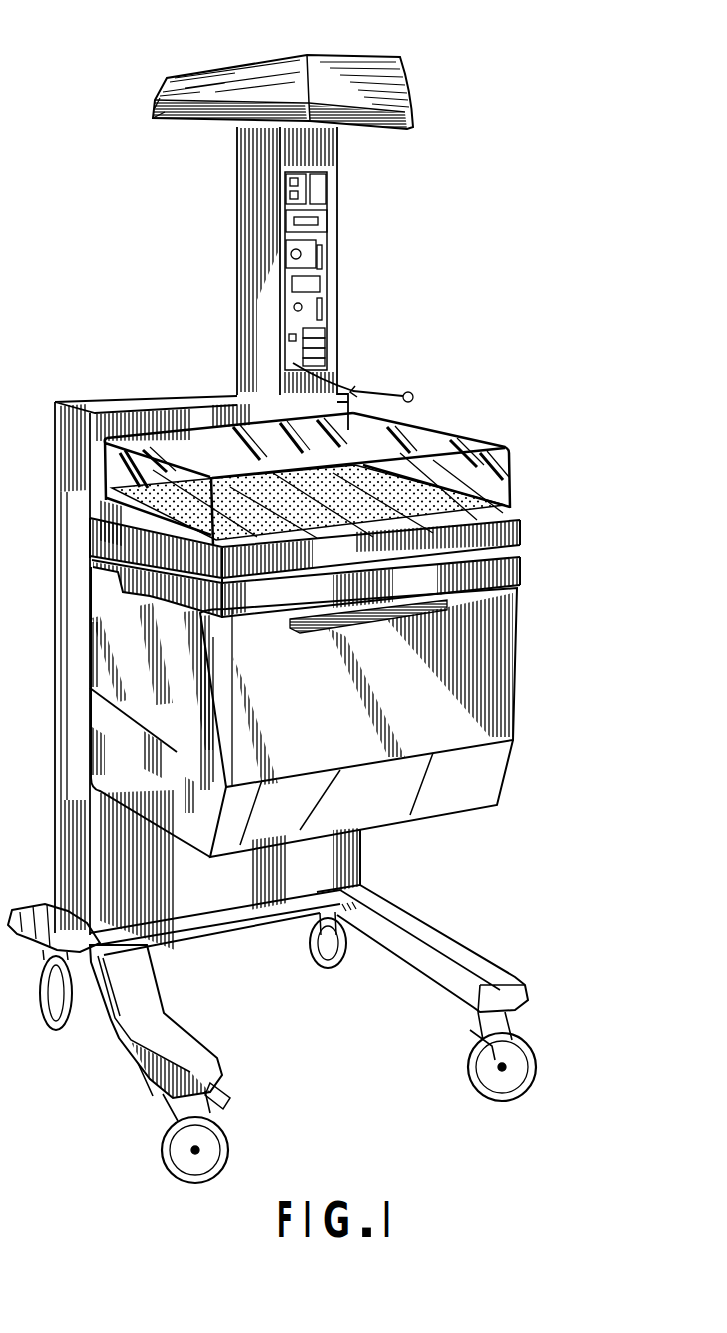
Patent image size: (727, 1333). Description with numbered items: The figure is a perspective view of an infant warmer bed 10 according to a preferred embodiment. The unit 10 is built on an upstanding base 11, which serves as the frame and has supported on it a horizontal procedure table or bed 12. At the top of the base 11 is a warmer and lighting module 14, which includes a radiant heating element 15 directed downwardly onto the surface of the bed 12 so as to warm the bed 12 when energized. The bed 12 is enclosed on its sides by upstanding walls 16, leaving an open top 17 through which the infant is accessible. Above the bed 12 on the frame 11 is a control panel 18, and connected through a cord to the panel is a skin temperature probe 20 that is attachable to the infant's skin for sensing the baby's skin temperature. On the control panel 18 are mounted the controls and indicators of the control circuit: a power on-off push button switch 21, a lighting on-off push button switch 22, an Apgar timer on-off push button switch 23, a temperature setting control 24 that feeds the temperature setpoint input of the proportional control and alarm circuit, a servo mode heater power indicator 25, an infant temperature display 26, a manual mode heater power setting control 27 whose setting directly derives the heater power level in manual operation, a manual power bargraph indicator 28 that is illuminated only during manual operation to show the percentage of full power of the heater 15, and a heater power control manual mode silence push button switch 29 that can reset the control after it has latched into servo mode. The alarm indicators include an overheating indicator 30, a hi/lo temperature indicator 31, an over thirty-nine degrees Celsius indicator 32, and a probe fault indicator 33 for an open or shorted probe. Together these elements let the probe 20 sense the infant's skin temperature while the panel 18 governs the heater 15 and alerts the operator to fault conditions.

The infant warmer bed 10 is at (544, 66).
The base 11 is at (467, 940).
The procedure table or bed 12 is at (430, 499).
The warmer and lighting module 14 is at (419, 97).
The radiant heating element 15 is at (272, 130).
The upstanding walls 16 is at (103, 486).
The open top 17 is at (250, 458).
The control panel 18 is at (345, 164).
The skin temperature probe 20 is at (413, 396).
The power on-off push button switch 21 is at (289, 183).
The lighting on-off push button switch 22 is at (287, 221).
The Apgar timer on-off push button switch 23 is at (294, 223).
The temperature setting control 24 is at (291, 256).
The servo mode heater power indicator 25 is at (321, 252).
The infant temperature display 26 is at (292, 284).
The manual mode heater power setting control 27 is at (293, 308).
The manual power bargraph indicator 28 is at (321, 300).
The heater power control manual mode silence push button switch 29 is at (289, 339).
The overheating indicator 30 is at (326, 332).
The hi/lo temperature indicator 31 is at (326, 342).
The over 39° C. indicator 32 is at (326, 352).
The probe fault indicator 33 is at (326, 362).